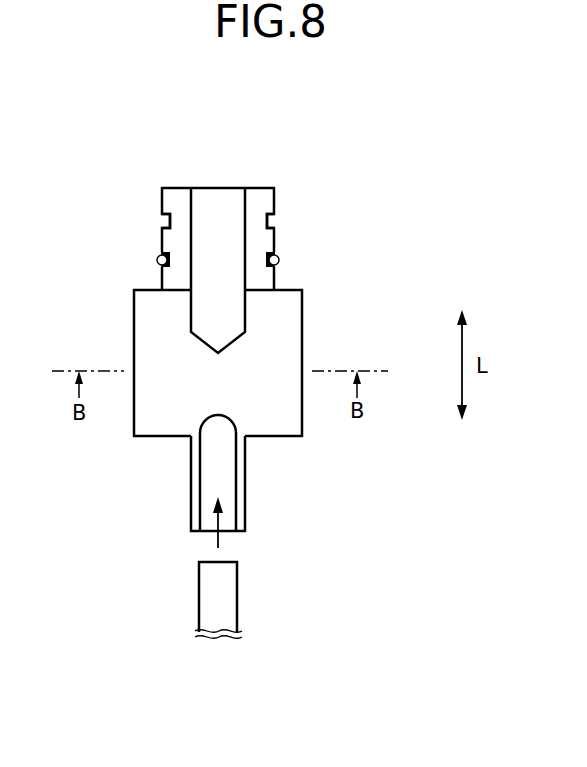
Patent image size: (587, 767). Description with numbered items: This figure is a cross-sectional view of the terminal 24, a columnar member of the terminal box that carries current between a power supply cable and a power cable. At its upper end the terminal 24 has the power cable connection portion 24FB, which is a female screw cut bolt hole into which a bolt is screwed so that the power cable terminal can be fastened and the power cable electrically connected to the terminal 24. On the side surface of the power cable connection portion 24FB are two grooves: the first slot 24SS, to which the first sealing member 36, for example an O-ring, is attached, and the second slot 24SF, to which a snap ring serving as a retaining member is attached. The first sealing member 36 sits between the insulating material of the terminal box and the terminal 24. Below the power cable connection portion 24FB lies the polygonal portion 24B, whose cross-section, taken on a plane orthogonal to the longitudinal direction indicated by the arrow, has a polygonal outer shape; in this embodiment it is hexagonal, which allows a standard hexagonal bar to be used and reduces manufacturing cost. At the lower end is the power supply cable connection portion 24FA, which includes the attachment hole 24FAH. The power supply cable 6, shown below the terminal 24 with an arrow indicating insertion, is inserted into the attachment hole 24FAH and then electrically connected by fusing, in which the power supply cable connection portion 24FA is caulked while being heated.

The terminal 24 is at (90, 160).
The power cable connection portion 24FB is at (220, 205).
The second slot 24SF is at (276, 218).
The first slot 24SS is at (274, 255).
The first sealing member 36 is at (157, 259).
The polygonal portion 24B is at (147, 327).
The power supply cable connection portion 24FA is at (246, 498).
The attachment hole 24FAH is at (213, 478).
The power supply cable 6 is at (227, 594).